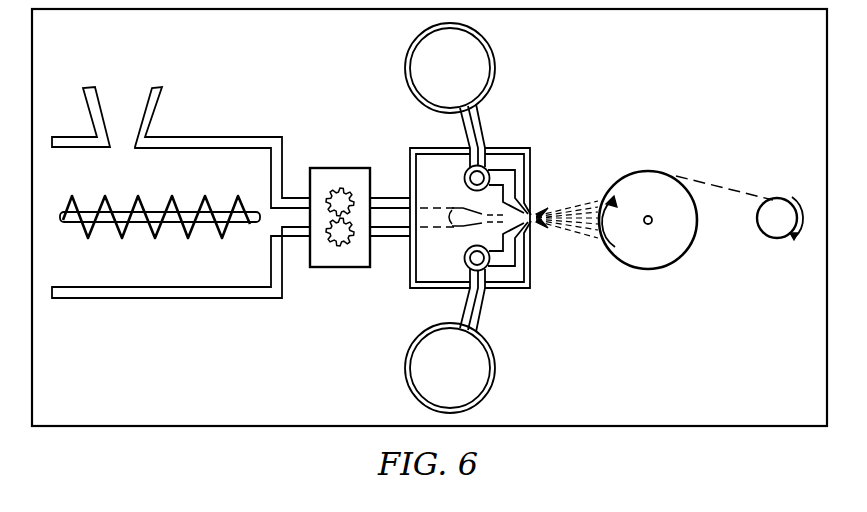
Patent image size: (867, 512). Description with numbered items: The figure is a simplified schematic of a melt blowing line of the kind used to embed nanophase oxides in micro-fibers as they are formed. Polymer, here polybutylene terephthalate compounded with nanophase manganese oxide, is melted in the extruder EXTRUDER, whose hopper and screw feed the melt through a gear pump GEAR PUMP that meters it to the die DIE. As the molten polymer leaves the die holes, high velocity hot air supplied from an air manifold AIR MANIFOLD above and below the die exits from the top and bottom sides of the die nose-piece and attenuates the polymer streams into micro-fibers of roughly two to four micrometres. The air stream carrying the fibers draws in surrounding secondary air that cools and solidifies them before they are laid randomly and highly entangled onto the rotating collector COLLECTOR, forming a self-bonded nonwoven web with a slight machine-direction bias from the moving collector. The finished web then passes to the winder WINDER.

The extruder EXTRUDER is at (181, 192).
The gear pump GEAR PUMP is at (340, 244).
The die DIE is at (470, 218).
The air manifold AIR MANIFOLD is at (515, 218).
The collector COLLECTOR is at (685, 234).
The winder WINDER is at (776, 233).